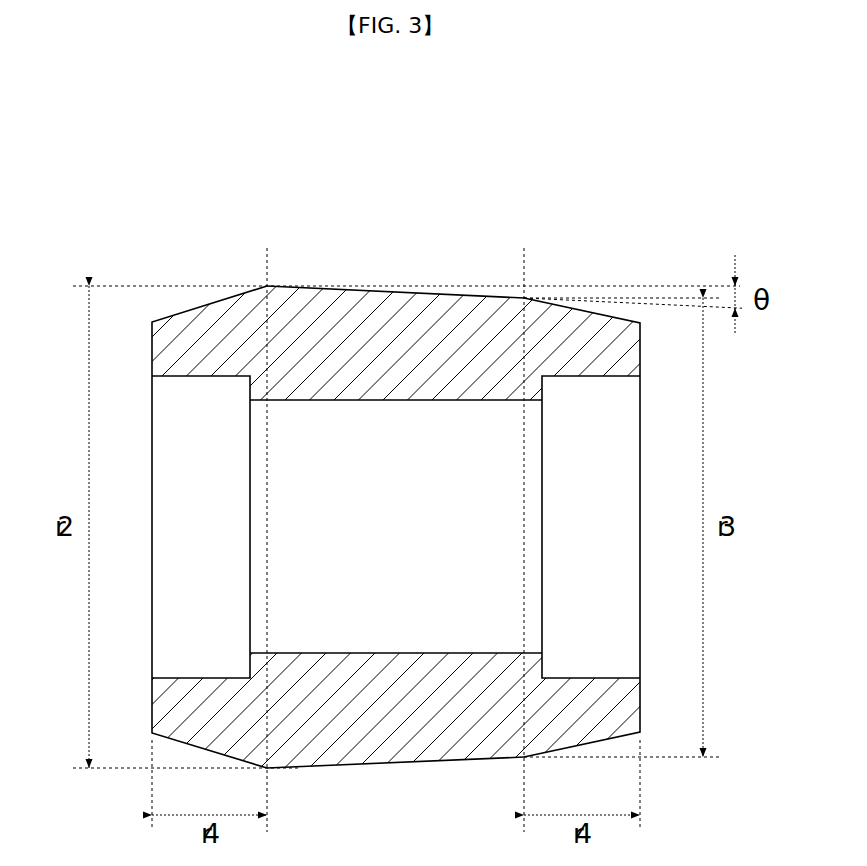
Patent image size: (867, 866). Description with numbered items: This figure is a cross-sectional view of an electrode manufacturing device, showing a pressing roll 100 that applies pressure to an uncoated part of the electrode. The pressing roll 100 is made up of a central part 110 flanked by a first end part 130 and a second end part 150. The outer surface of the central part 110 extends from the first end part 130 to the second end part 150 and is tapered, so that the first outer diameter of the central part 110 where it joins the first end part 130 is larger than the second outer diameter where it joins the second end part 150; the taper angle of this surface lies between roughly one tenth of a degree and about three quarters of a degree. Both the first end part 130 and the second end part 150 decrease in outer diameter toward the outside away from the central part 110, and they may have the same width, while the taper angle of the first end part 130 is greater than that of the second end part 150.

The pressing roll 100 is at (414, 180).
The central part 110 is at (400, 312).
The first end part 130 is at (208, 322).
The second end part 150 is at (582, 330).